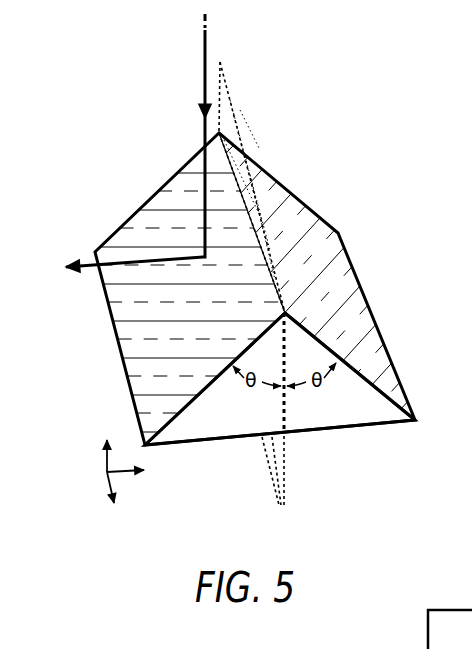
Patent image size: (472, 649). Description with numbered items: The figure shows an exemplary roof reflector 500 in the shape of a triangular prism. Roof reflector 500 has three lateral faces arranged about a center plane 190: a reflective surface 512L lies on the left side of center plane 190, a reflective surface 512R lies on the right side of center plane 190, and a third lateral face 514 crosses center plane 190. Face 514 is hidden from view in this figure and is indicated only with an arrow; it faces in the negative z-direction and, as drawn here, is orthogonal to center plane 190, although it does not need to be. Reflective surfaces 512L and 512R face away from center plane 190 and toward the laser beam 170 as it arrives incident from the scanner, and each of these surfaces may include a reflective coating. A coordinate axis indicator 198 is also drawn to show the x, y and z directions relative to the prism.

The roof reflector 500 is at (130, 66).
The laser beam 170 is at (142, 140).
The center plane 190 is at (240, 110).
The reflective surface 512L is at (172, 228).
The reflective surface 512R is at (315, 245).
The third lateral face 514 is at (316, 443).
The coordinate axes 198 is at (89, 486).